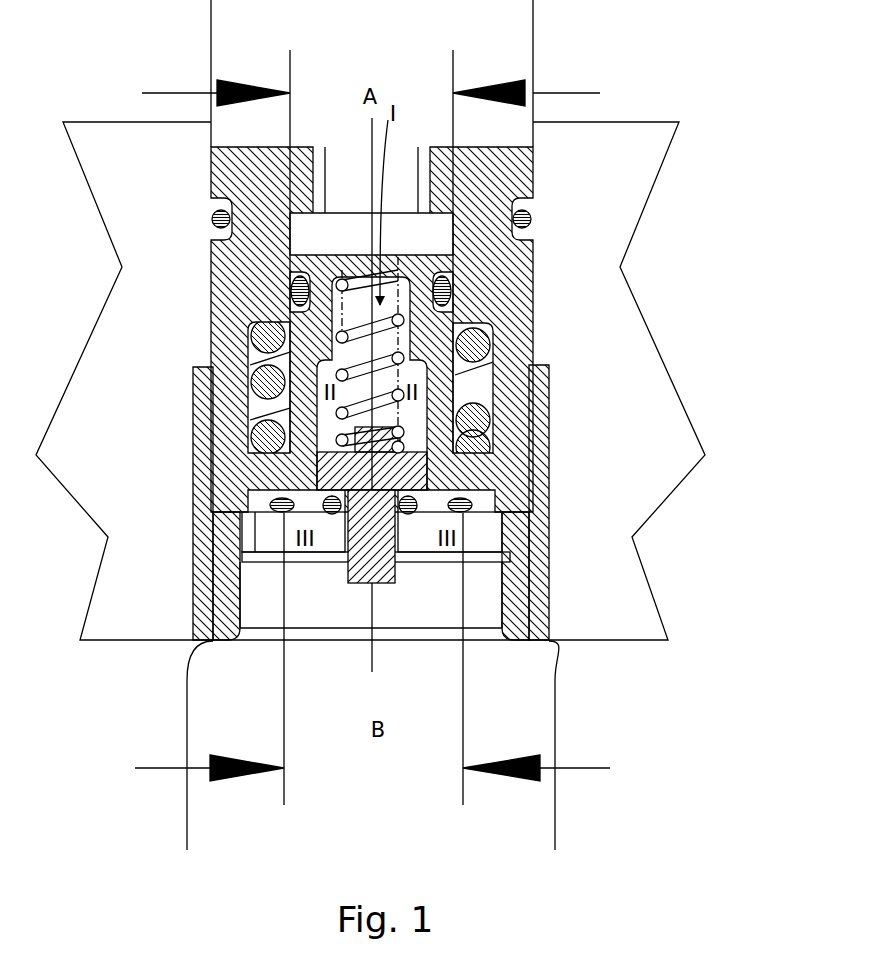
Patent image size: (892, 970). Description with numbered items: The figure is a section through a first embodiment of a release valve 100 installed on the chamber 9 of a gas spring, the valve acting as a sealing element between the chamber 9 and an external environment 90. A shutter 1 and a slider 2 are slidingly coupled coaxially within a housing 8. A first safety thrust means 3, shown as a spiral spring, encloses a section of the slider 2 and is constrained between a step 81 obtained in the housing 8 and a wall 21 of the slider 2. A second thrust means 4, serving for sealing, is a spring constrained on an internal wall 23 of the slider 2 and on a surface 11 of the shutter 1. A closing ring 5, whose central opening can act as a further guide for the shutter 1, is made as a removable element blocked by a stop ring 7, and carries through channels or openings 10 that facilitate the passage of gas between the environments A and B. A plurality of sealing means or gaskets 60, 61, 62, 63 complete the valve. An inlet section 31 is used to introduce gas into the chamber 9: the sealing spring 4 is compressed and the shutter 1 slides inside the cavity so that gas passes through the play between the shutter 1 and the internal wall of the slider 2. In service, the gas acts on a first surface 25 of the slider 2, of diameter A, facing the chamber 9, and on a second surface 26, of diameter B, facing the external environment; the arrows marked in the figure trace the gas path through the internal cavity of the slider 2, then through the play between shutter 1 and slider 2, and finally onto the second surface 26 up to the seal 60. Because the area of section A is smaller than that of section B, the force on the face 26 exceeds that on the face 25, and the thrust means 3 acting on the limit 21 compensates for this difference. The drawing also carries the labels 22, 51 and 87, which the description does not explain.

The release valve 100 is at (600, 73).
The chamber 9 is at (371, 73).
The external environment 90 is at (372, 681).
The housing 8 is at (248, 178).
The step 81 is at (480, 318).
The slider 2 is at (242, 410).
The through channels or openings 10 is at (240, 547).
The stop ring 7 is at (502, 545).
The rounded housing edge 87 is at (260, 595).
The closing ring 5 is at (270, 530).
The right plate segment 22 is at (487, 520).
The bottom plate 51 is at (333, 553).
The inlet section 31 is at (303, 645).
The surface of the shutter 11 is at (397, 425).
The second surface 26 is at (428, 523).
The sealing means 60 is at (282, 503).
The sealing means 61 is at (408, 505).
The sealing means 62 is at (453, 287).
The sealing means 63 is at (528, 215).
The first safety thrust means 3 is at (262, 362).
The wall of the slider 21 is at (268, 437).
The second thrust means 4 is at (330, 348).
The internal wall of the slider 23 is at (357, 277).
The first surface 25 is at (411, 250).
The shutter 1 is at (317, 442).